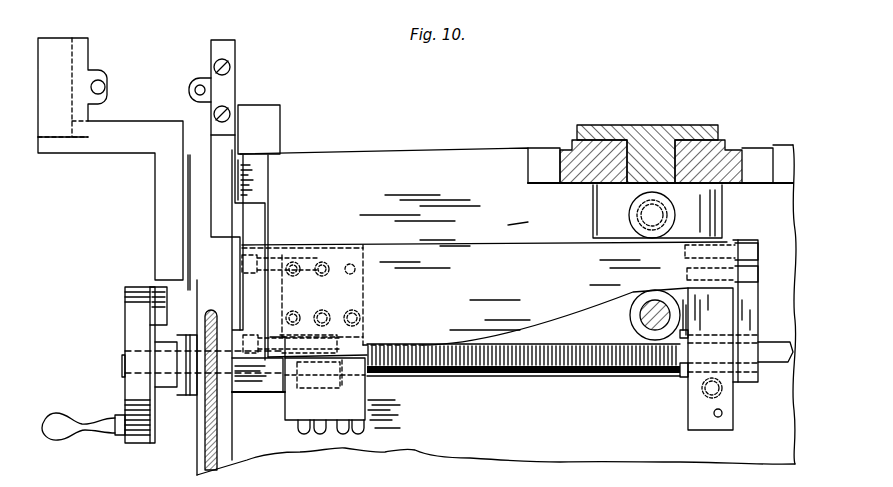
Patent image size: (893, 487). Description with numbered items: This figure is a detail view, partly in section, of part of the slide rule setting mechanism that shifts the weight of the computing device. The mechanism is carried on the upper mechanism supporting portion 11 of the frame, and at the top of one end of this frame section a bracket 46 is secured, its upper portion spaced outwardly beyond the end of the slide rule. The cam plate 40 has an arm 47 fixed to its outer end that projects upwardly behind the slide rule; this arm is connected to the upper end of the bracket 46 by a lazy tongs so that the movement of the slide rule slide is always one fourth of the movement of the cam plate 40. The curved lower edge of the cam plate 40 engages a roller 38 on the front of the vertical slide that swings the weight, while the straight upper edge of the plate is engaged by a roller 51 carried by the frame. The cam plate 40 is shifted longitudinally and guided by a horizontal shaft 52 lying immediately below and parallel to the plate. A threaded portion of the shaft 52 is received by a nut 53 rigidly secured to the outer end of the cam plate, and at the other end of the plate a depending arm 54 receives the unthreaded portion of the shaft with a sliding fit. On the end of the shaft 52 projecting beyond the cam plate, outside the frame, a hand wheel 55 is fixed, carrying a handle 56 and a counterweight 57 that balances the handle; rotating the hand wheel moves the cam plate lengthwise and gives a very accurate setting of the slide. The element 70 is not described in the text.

The mechanism supporting portion of the frame 11 is at (493, 455).
The roller 38 is at (633, 318).
The cam plate 40 is at (523, 251).
The bracket 46 is at (106, 147).
The arm 47 is at (237, 86).
The roller 51 is at (631, 214).
The horizontal shaft 52 is at (447, 376).
The nut 53 is at (365, 386).
The depending arm 54 is at (758, 322).
The hand wheel 55 is at (131, 330).
The handle 56 is at (96, 402).
The counterweight 57 is at (150, 300).
The block 70 is at (232, 160).